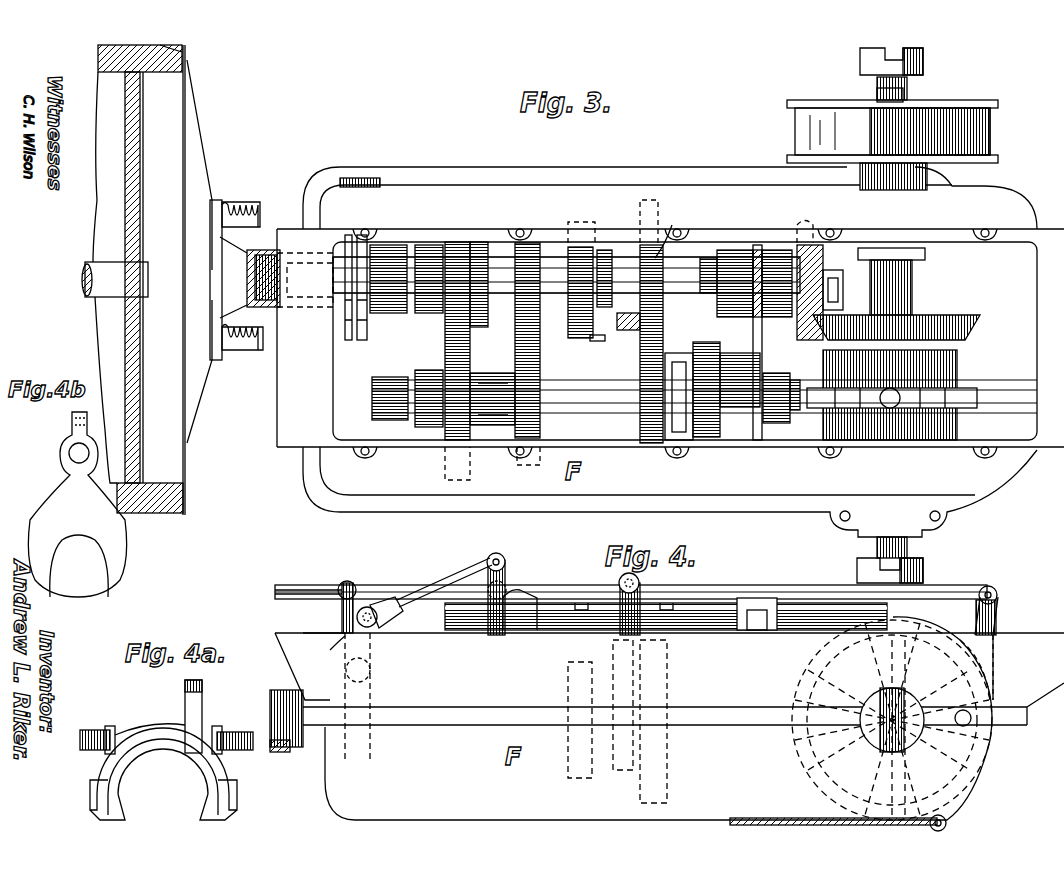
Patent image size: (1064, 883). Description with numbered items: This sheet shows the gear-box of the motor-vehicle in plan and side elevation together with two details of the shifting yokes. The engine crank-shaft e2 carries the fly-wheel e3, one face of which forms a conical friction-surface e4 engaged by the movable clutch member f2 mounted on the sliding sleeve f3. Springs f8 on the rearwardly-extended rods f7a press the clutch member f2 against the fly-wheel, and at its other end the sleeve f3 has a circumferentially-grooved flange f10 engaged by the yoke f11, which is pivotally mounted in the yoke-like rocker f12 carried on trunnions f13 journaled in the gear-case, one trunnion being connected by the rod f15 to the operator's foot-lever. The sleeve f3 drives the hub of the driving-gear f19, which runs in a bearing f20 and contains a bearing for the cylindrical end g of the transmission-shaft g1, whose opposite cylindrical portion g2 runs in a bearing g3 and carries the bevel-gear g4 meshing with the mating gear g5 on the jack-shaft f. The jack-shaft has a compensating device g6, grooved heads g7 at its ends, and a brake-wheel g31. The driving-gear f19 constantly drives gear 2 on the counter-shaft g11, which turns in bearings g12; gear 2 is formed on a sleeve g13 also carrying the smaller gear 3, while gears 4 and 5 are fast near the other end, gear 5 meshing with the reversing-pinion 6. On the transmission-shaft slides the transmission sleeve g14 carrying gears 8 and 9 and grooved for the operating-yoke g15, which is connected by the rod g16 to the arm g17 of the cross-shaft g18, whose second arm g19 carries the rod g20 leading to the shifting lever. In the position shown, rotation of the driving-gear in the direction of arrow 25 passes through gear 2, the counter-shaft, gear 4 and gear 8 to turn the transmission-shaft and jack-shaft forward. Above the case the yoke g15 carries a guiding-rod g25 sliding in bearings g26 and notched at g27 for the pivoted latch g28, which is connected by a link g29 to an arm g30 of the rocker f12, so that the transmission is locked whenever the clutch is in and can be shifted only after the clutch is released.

In FIG. 3, the engine crank-shaft e2 is at (100, 272).
In FIG. 3, the fly-wheel e3 is at (182, 48).
In FIG. 3, the conical friction-surface e4 is at (182, 53).
In FIG. 3, the jack-shaft f is at (905, 283).
In FIG. 3, the movable clutch member f2 is at (190, 178).
In FIG. 3, the sliding sleeve f3 is at (243, 258).
In FIG. 4, the sliding sleeve f3 is at (280, 756).
In FIG. 3, the rearwardly-extended rods f7a is at (262, 212).
In FIG. 3, the springs f8 is at (238, 205).
In FIG. 3, the circumferentially-grooved flange f10 is at (352, 332).
In FIG. 4, the yoke f11 is at (353, 752).
In FIG. 4A, the yoke f11 is at (135, 748).
In FIG. 4, the yoke-like rocker f12 is at (335, 640).
In FIG. 4A, the yoke-like rocker f12 is at (150, 728).
In FIG. 4, the trunnions f13 is at (330, 650).
In FIG. 4A, the trunnions f13 is at (95, 730).
In FIG. 4, the rod f15 is at (312, 592).
In FIG. 3, the driving-gear f19 is at (550, 326).
In FIG. 3, the bearing f20 is at (387, 312).
In FIG. 3, the cylindrical end g is at (568, 318).
In FIG. 3, the transmission-shaft g1 is at (523, 267).
In FIG. 3, the cylindrical portion g2 is at (715, 310).
In FIG. 3, the bearing g3 is at (735, 265).
In FIG. 3, the bevel-gear g4 is at (826, 310).
In FIG. 3, the mating gear g5 is at (938, 322).
In FIG. 3, the compensating device g6 is at (892, 395).
In FIG. 3, the heads g7 is at (923, 66).
In FIG. 4, the heads g7 is at (923, 572).
In FIG. 3, the counter-shaft g11 is at (372, 396).
In FIG. 3, the bearings g12 is at (395, 425).
In FIG. 3, the sleeve g13 is at (497, 430).
In FIG. 3, the sliding transmission sleeve g14 is at (604, 308).
In FIG. 4, the sliding transmission sleeve g14 is at (603, 680).
In FIG. 3, the operating-yoke g15 is at (628, 332).
In FIG. 4, the operating-yoke g15 is at (621, 592).
In FIG. 4B, the operating-yoke g15 is at (80, 478).
In FIG. 4, the rod g16 is at (812, 585).
In FIG. 4, the arm g17 is at (995, 618).
In FIG. 4, the cross-shaft g18 is at (985, 740).
In FIG. 4, the second arm g19 is at (968, 790).
In FIG. 4, the rod g20 is at (833, 831).
In FIG. 4, the guiding-rod g25 is at (695, 605).
In FIG. 4, the bearings g26 is at (522, 598).
In FIG. 4, the notches g27 is at (580, 604).
In FIG. 4, the pivoted locking device or latch g28 is at (505, 560).
In FIG. 4, the link g29 is at (458, 578).
In FIG. 4, the arm g30 is at (380, 618).
In FIG. 4A, the arm g30 is at (202, 700).
In FIG. 3, the brake-wheel g31 is at (985, 135).
In FIG. 3, the gear 2 is at (511, 344).
In FIG. 3, the gear 3 is at (540, 358).
In FIG. 3, the gear 4 is at (652, 445).
In FIG. 3, the gear 5 is at (705, 437).
In FIG. 3, the reversing-pinion 6 is at (714, 352).
In FIG. 3, the gear 8 is at (668, 231).
In FIG. 4, the gear 8 is at (667, 684).
In FIG. 4, the gear 9 is at (568, 674).
In FIG. 3, the arrow 25 is at (433, 282).